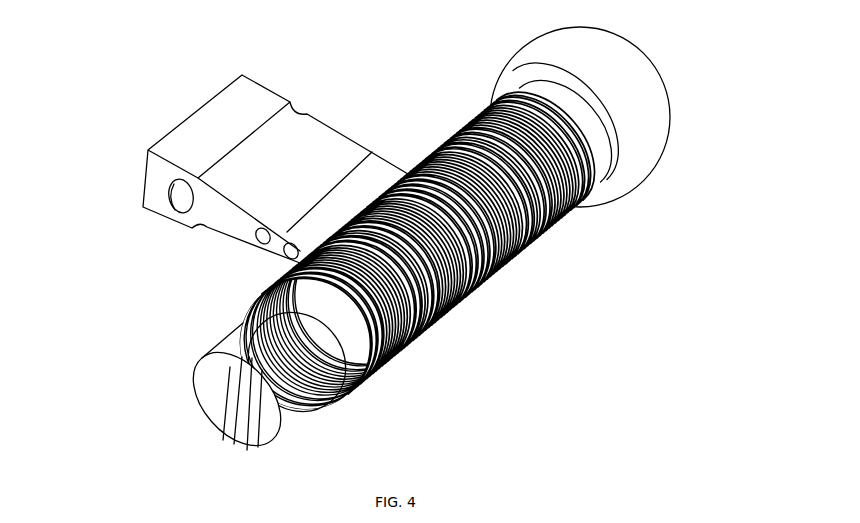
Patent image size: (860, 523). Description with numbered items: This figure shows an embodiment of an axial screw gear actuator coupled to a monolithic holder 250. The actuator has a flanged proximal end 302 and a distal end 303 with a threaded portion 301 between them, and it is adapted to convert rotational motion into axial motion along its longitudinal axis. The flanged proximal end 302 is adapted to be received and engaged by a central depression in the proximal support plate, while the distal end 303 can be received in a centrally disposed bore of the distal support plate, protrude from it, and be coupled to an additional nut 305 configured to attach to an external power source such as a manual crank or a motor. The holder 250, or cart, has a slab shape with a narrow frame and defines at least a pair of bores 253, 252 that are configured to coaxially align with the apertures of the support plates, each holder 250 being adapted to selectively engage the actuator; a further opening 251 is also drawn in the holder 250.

The holder 250 is at (290, 132).
The hole 251 is at (257, 237).
The bore 252 is at (281, 258).
The bore 253 is at (170, 207).
The threaded portion 301 is at (533, 237).
The flanged proximal end 302 is at (643, 155).
The distal end 303 is at (300, 410).
The nut 305 is at (192, 381).